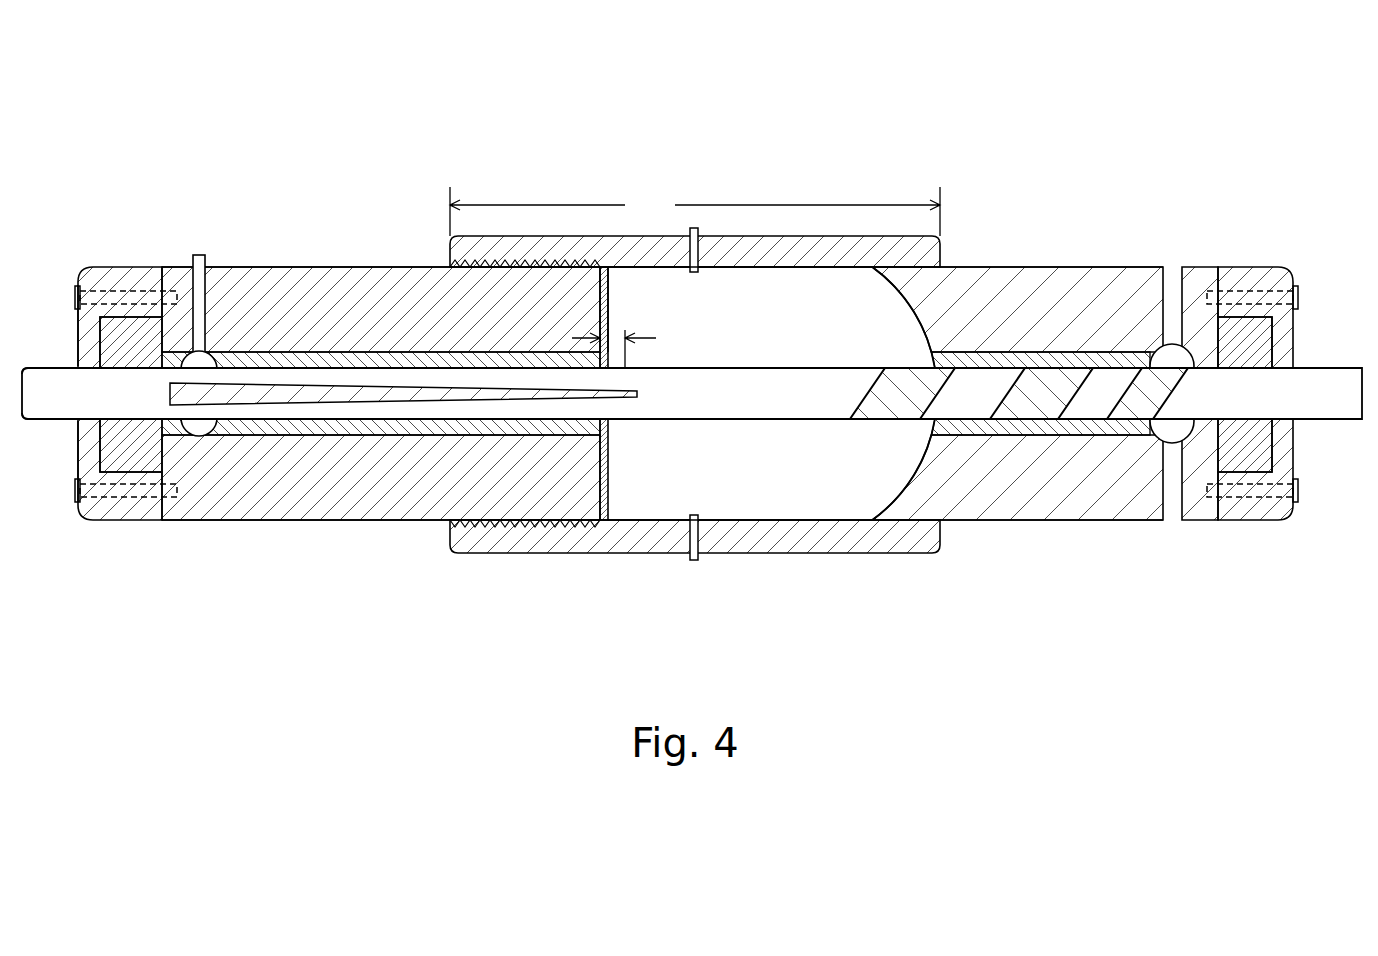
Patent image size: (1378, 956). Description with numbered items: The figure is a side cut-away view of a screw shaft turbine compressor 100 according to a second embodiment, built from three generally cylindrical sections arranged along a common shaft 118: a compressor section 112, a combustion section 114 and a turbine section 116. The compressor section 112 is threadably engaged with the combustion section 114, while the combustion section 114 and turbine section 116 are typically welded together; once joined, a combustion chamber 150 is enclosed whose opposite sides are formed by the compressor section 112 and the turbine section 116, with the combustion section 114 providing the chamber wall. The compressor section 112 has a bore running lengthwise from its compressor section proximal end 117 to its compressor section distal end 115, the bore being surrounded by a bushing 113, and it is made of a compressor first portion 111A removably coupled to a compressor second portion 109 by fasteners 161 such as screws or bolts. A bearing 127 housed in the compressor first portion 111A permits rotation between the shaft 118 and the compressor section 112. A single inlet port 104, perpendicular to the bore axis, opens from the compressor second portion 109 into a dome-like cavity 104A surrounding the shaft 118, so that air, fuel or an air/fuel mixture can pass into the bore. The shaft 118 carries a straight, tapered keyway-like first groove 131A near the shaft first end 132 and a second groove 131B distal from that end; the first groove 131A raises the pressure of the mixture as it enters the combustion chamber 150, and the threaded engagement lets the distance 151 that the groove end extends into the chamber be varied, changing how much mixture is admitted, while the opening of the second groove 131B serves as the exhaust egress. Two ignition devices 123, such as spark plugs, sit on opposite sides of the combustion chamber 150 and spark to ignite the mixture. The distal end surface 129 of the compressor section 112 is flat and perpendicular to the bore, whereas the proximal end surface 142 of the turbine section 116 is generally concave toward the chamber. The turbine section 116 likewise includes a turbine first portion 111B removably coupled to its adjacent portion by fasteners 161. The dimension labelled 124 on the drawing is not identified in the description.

The screw shaft turbine compressor 100 is at (491, 101).
The inlet port 104 is at (205, 335).
The cavity 104A is at (199, 355).
The compressor second portion 109 is at (432, 490).
The compressor first portion 111A is at (128, 505).
The turbine first portion 111B is at (1230, 520).
The compressor section 112 is at (292, 302).
The bushing 113 is at (300, 430).
The combustion section 114 is at (775, 236).
The compressor section distal end 115 is at (605, 492).
The turbine section 116 is at (1115, 267).
The compressor section proximal end 117 is at (66, 330).
The shaft 118 is at (50, 387).
The ignition device 123 is at (694, 228).
The collar length 124 is at (695, 211).
The bearing 127 is at (118, 455).
The distal end surface 129 is at (608, 290).
The first groove 131A is at (640, 395).
The second groove 131B is at (887, 394).
The shaft first end 132 is at (13, 420).
The proximal end surface 142 is at (912, 468).
The combustion chamber 150 is at (792, 500).
The distance 151 is at (635, 346).
The fasteners 161 is at (110, 293).